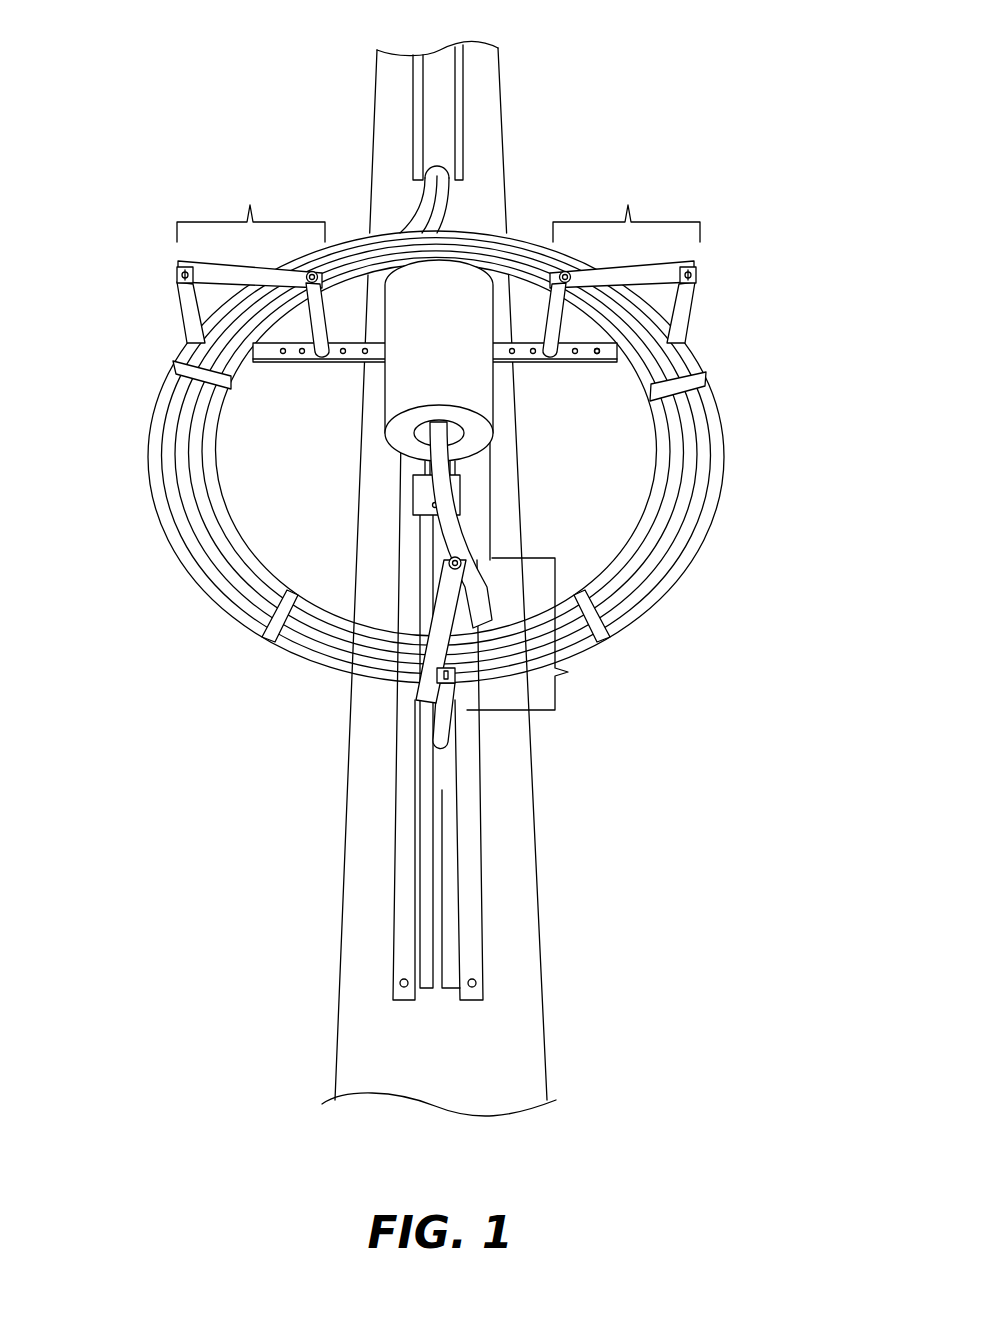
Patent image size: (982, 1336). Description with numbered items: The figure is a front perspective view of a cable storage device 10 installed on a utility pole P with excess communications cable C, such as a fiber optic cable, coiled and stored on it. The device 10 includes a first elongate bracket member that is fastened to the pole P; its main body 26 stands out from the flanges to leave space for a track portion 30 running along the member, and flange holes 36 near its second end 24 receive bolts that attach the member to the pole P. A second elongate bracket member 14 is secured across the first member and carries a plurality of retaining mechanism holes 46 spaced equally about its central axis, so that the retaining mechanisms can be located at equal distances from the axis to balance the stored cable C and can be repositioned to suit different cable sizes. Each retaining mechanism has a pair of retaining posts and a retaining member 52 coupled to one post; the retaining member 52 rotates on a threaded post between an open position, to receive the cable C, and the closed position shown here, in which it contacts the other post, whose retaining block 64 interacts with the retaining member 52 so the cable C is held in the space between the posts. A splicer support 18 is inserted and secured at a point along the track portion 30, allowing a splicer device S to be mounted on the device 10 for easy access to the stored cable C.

The cable storage device 10 is at (150, 60).
The utility pole P is at (490, 136).
The communications cable C is at (708, 522).
The splicer device S is at (397, 443).
The second elongate bracket member 14 is at (288, 357).
The splicer support 18 is at (422, 493).
The second end 24 is at (472, 1001).
The main body 26 is at (428, 548).
The track portion 30 is at (432, 990).
The flange holes 36 is at (400, 984).
The retaining mechanism holes 46 is at (597, 355).
The retaining member 52 is at (222, 270).
The retaining block 64 is at (180, 274).